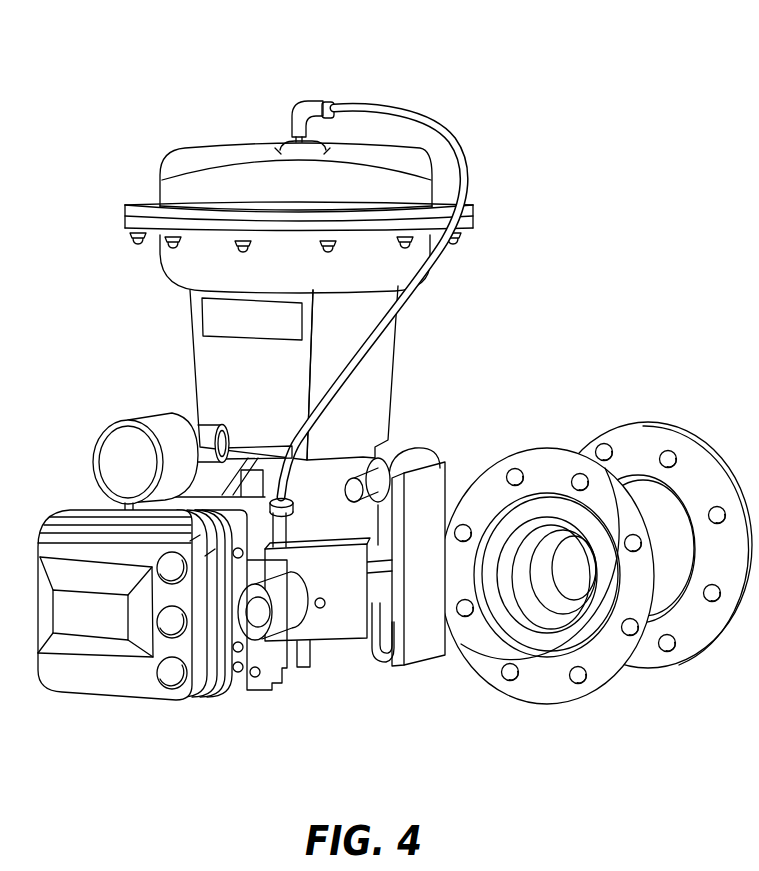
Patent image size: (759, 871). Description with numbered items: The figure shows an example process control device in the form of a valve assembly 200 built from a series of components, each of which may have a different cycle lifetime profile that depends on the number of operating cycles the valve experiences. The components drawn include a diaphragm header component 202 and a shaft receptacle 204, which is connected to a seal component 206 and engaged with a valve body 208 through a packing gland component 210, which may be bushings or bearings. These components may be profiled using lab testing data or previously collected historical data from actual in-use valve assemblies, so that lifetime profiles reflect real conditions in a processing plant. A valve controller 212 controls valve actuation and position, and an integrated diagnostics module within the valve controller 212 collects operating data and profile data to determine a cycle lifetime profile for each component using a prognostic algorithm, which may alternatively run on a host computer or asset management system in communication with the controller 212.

The valve assembly 200 is at (604, 63).
The diaphragm header component 202 is at (108, 170).
The shaft receptacle 204 is at (565, 724).
The seal component 206 is at (422, 637).
The valve body 208 is at (397, 350).
The packing gland component 210 is at (427, 478).
The valve controller 212 is at (83, 714).